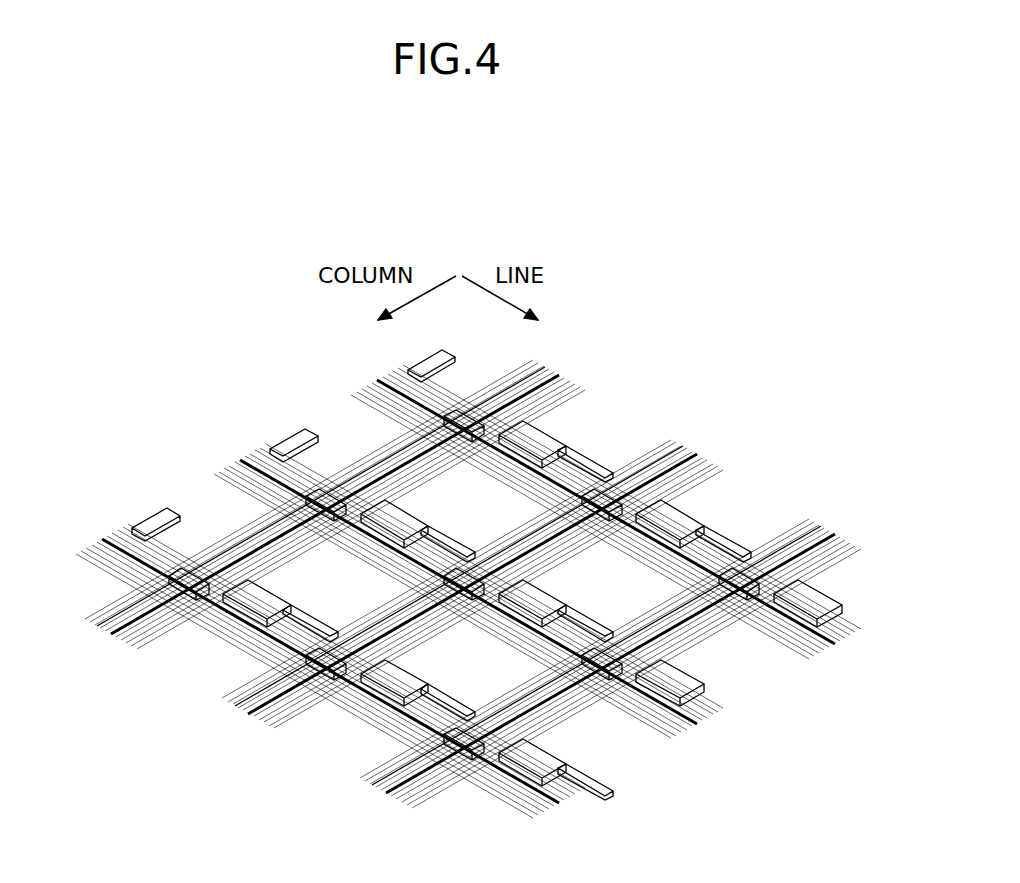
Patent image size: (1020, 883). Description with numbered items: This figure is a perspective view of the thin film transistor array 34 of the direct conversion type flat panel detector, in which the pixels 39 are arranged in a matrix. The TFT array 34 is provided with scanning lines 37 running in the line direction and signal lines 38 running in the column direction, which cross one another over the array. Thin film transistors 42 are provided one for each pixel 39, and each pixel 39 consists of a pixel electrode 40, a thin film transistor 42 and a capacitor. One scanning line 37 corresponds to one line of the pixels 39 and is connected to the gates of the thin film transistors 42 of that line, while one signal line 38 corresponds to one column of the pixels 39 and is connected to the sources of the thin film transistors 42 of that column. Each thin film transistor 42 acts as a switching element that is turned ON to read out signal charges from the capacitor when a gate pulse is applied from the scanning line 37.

The thin film transistor array 34 is at (608, 396).
The scanning line 37 is at (736, 576).
The signal line 38 is at (206, 568).
The pixel 39 is at (506, 632).
The pixel electrode 40 is at (306, 628).
The thin film transistor 42 is at (700, 522).